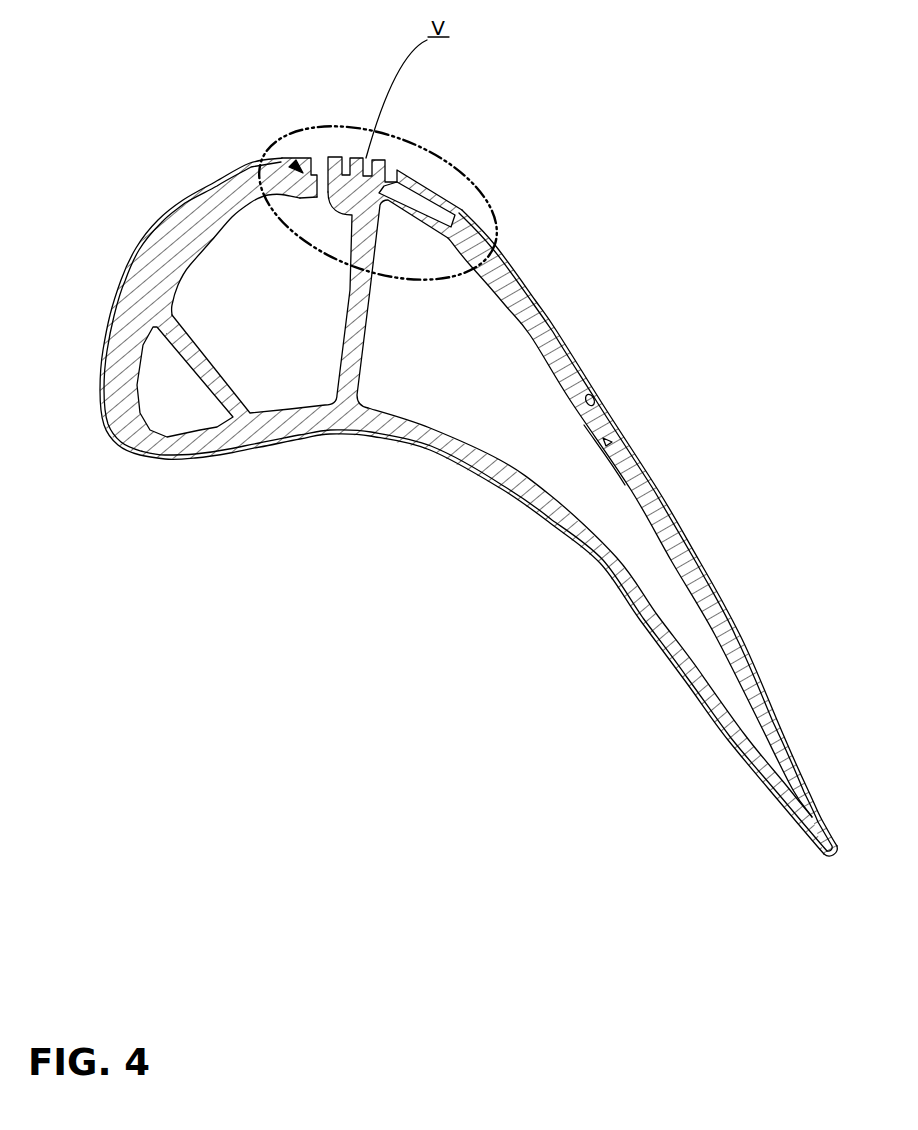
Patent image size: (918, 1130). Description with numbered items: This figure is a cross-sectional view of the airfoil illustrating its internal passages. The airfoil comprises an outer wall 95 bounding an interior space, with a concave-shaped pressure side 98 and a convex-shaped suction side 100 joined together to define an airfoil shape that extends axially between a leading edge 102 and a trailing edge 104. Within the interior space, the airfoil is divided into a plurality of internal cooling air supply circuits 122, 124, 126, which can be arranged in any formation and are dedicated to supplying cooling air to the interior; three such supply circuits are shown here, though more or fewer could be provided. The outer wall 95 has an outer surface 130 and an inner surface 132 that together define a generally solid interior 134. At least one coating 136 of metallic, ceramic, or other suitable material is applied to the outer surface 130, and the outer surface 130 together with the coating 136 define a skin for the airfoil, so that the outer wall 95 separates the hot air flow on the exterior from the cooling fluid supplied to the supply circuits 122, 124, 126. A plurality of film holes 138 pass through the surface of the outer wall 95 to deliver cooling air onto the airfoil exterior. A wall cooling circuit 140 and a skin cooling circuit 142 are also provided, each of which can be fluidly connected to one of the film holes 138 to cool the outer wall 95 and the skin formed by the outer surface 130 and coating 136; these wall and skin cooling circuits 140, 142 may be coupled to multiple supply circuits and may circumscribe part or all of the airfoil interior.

The outer wall 95 is at (720, 583).
The pressure side 98 is at (503, 490).
The suction side 100 is at (650, 473).
The leading edge 102 is at (100, 400).
The trailing edge 104 is at (832, 860).
The internal cooling air supply circuit 122 is at (292, 322).
The internal cooling air supply circuit 124 is at (461, 374).
The internal cooling air supply circuit 126 is at (180, 415).
The outer surface 130 is at (587, 397).
The inner surface 132 is at (597, 437).
The interior 134 is at (608, 443).
The coating 136 is at (610, 437).
The film holes 138 is at (343, 157).
The wall cooling circuit 140 is at (466, 243).
The skin cooling circuit 142 is at (290, 166).